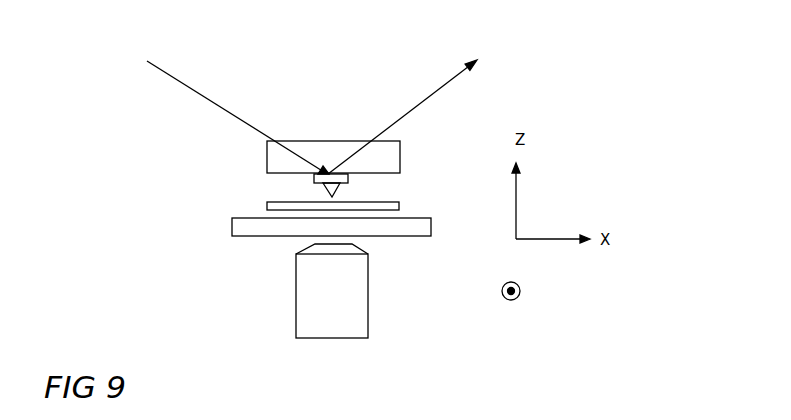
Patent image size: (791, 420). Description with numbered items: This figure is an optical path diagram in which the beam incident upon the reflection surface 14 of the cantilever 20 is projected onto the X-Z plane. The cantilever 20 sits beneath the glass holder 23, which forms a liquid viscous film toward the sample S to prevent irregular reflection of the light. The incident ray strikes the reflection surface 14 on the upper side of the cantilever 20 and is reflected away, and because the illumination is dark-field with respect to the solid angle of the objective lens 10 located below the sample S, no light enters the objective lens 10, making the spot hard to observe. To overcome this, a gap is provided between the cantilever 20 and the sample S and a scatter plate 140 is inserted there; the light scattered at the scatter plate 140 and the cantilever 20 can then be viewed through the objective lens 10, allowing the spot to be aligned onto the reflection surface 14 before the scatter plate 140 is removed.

The objective lens 10 is at (346, 292).
The reflection surface 14 is at (337, 172).
The cantilever 20 is at (316, 175).
The glass holder 23 is at (328, 147).
The scatter plate 140 is at (267, 202).
The sample S is at (240, 238).